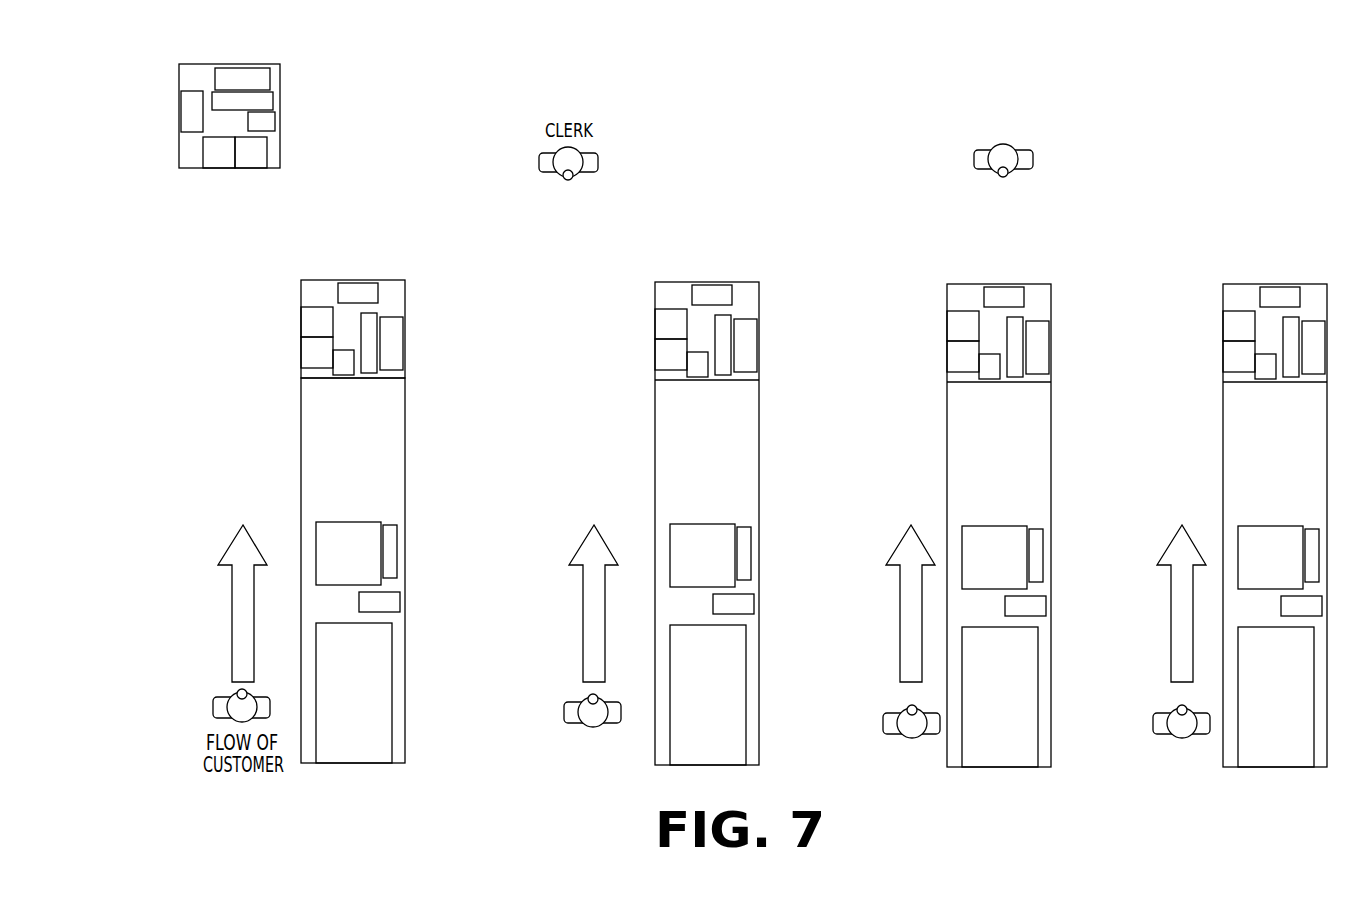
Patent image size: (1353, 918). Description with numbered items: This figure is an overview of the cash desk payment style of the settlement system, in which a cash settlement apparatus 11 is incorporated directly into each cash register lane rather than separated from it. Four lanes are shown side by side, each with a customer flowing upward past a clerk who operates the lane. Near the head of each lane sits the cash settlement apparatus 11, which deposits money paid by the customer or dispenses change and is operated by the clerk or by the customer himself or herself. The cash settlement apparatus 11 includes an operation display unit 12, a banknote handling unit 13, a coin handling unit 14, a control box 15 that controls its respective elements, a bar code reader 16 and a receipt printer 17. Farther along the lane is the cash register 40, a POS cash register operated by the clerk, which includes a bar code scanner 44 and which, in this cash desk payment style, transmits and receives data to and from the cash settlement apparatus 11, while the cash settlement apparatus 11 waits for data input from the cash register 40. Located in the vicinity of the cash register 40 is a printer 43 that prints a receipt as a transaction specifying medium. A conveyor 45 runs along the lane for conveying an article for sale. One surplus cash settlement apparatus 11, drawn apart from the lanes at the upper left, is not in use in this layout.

The cash settlement apparatus 11 is at (280, 78).
The operation display unit 12 is at (372, 323).
The banknote handling unit 13 is at (314, 324).
The coin handling unit 14 is at (314, 357).
The control box 15 is at (392, 352).
The bar code reader 16 is at (343, 378).
The receipt printer 17 is at (352, 295).
The cash register 40 is at (393, 548).
The printer 43 is at (390, 603).
The bar code scanner 44 is at (353, 535).
The conveyor 45 is at (375, 685).